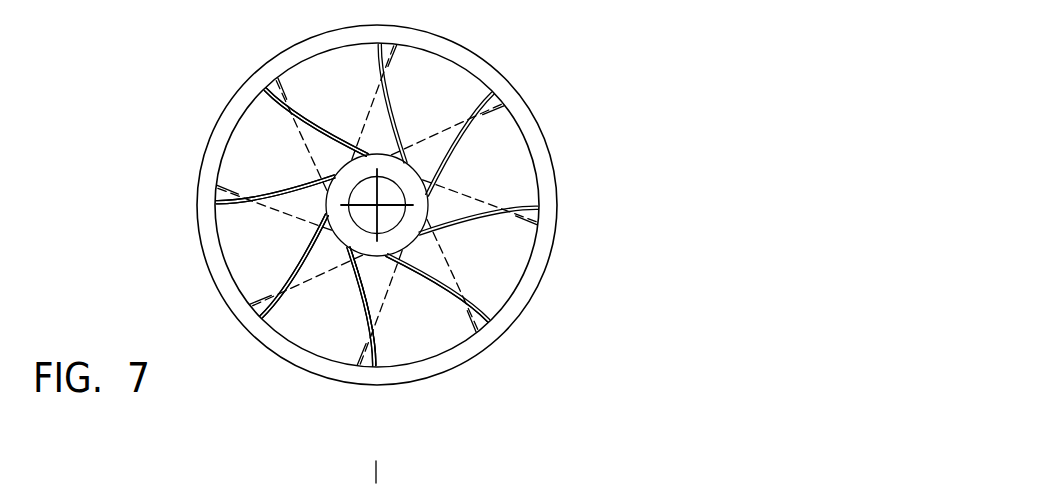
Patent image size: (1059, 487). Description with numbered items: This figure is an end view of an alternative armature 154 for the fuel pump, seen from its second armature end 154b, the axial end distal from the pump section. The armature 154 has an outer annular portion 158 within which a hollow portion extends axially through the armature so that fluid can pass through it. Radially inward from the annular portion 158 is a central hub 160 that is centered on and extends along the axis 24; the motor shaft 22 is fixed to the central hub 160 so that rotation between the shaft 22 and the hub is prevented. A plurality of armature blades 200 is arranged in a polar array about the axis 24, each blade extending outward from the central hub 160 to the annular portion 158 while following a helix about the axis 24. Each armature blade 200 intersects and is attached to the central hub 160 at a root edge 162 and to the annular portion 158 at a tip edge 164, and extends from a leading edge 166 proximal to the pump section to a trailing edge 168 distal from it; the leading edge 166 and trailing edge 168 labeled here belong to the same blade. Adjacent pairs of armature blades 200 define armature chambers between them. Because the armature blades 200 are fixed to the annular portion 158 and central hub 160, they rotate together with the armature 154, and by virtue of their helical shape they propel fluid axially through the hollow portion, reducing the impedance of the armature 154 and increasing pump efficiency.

The armature 154 is at (620, 100).
The second armature end 154b is at (537, 273).
The annular portion 158 is at (458, 205).
The central hub 160 is at (340, 226).
The root edge 162 is at (325, 215).
The tip edge 164 is at (283, 76).
The leading edge 166 is at (488, 292).
The trailing edge 168 is at (366, 328).
The armature blades 200 is at (415, 325).
The shaft 22 is at (362, 193).
The axis 24 is at (378, 203).